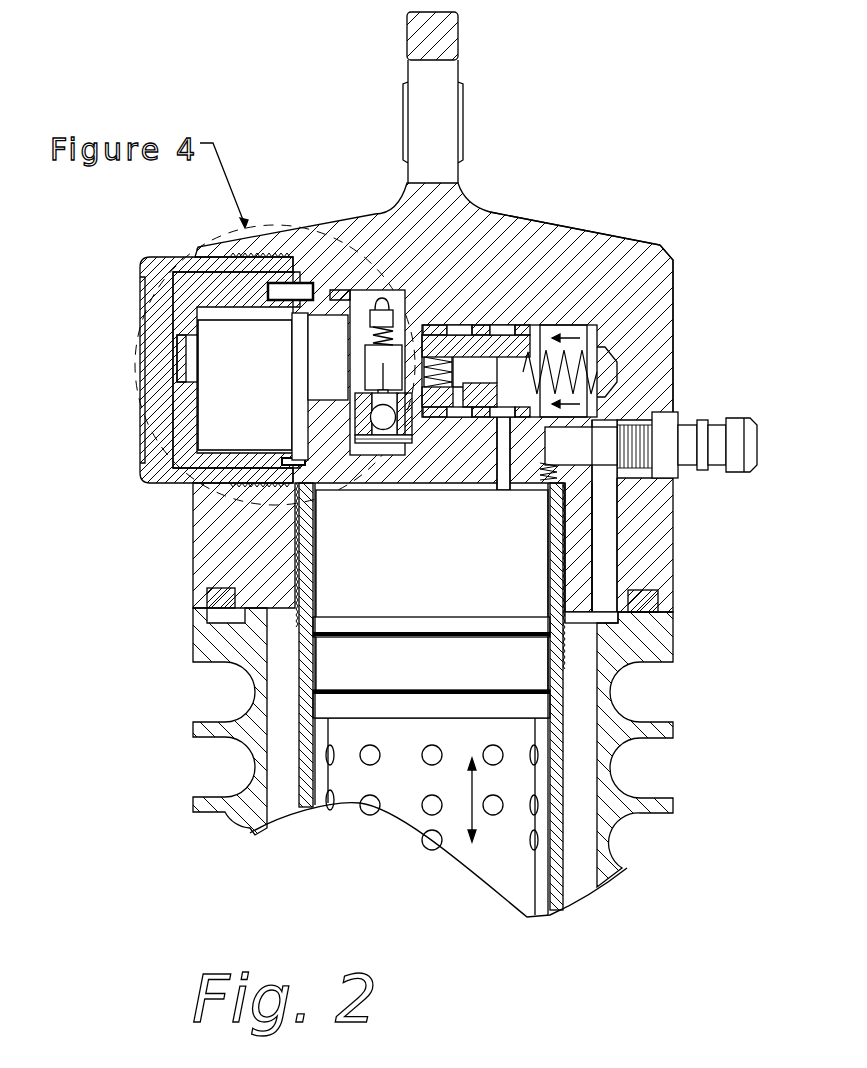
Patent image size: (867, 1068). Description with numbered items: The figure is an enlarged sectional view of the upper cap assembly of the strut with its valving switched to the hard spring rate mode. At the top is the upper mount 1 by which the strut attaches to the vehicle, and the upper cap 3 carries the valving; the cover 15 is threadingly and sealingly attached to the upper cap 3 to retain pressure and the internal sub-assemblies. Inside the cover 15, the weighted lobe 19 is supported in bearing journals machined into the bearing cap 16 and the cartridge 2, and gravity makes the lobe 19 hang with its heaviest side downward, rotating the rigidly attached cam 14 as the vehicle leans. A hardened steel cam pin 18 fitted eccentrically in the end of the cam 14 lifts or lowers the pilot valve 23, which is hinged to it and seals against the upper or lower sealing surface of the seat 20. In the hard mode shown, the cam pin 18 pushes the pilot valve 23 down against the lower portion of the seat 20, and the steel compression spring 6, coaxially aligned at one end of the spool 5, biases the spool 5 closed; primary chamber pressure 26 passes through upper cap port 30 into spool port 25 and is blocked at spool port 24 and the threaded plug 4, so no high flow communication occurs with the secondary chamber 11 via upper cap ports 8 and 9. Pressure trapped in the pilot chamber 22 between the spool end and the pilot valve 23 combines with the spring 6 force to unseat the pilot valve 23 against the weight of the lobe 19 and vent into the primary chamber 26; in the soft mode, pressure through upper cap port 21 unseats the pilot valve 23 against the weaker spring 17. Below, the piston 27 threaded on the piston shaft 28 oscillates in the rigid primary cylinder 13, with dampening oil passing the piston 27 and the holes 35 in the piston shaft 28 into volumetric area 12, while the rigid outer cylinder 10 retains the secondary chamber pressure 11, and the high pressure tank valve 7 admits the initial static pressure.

The upper mount 1 is at (437, 122).
The cartridge 2 is at (425, 292).
The upper cap 3 is at (528, 222).
The threaded plug 4 is at (612, 265).
The spool 5 is at (598, 323).
The compression spring 6 is at (598, 365).
The high pressure tank valve 7 is at (737, 447).
The upper cap port 8 is at (592, 498).
The upper cap port 9 is at (607, 582).
The outer cylinder 10 is at (675, 806).
The secondary chamber pressure 11 is at (577, 878).
The volumetric area 12 is at (545, 905).
The primary cylinder 13 is at (300, 765).
The cam 14 is at (344, 385).
The cover 15 is at (140, 333).
The bearing cap 16 is at (193, 268).
The compression spring 17 is at (380, 312).
The cam pin 18 is at (333, 335).
The weighted lobe 19 is at (245, 394).
The seat 20 is at (335, 432).
The upper cap port 21 is at (318, 483).
The pilot chamber 22 is at (364, 460).
The pilot valve 23 is at (397, 445).
The spool port 24 is at (465, 420).
The spool port 25 is at (533, 483).
The primary chamber 26 is at (441, 602).
The piston 27 is at (441, 675).
The piston shaft 28 is at (500, 872).
The upper cap port 30 is at (505, 430).
The holes 35 is at (415, 806).